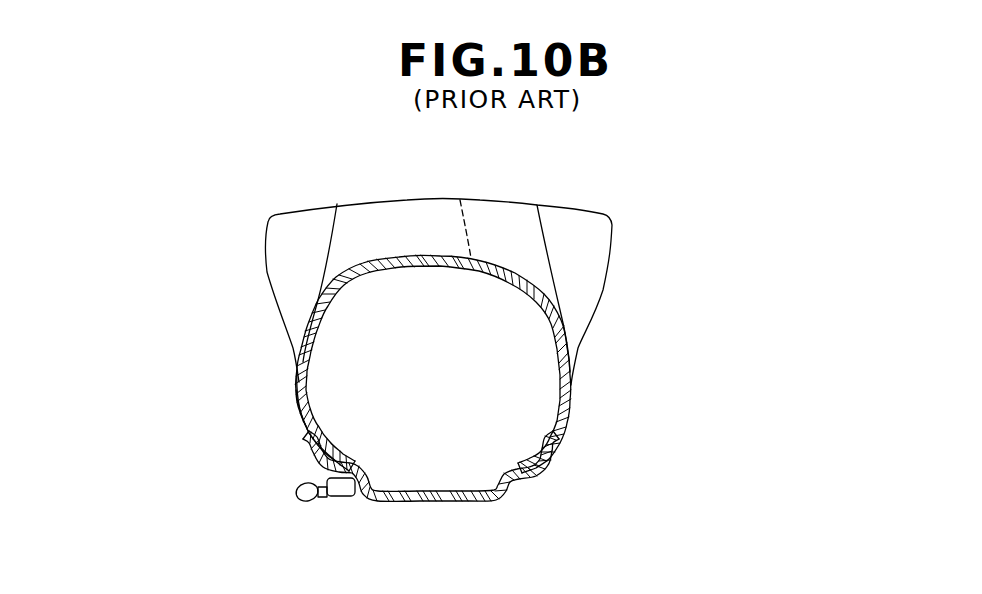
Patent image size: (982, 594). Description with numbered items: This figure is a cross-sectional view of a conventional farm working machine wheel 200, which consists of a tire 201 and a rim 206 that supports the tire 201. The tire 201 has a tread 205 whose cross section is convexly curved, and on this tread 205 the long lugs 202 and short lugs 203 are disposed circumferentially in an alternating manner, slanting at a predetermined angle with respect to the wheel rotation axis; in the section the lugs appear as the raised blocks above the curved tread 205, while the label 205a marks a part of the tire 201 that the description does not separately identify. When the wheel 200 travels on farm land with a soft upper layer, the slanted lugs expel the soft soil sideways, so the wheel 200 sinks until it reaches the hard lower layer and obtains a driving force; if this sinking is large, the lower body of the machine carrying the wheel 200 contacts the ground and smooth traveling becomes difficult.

The farm working machine wheel 200 is at (293, 148).
The tire 201 is at (295, 408).
The long lugs 202 is at (265, 226).
The short lugs 203 is at (318, 287).
The tread 205 is at (367, 271).
The bead portion 205a is at (319, 302).
The rim 206 is at (523, 476).